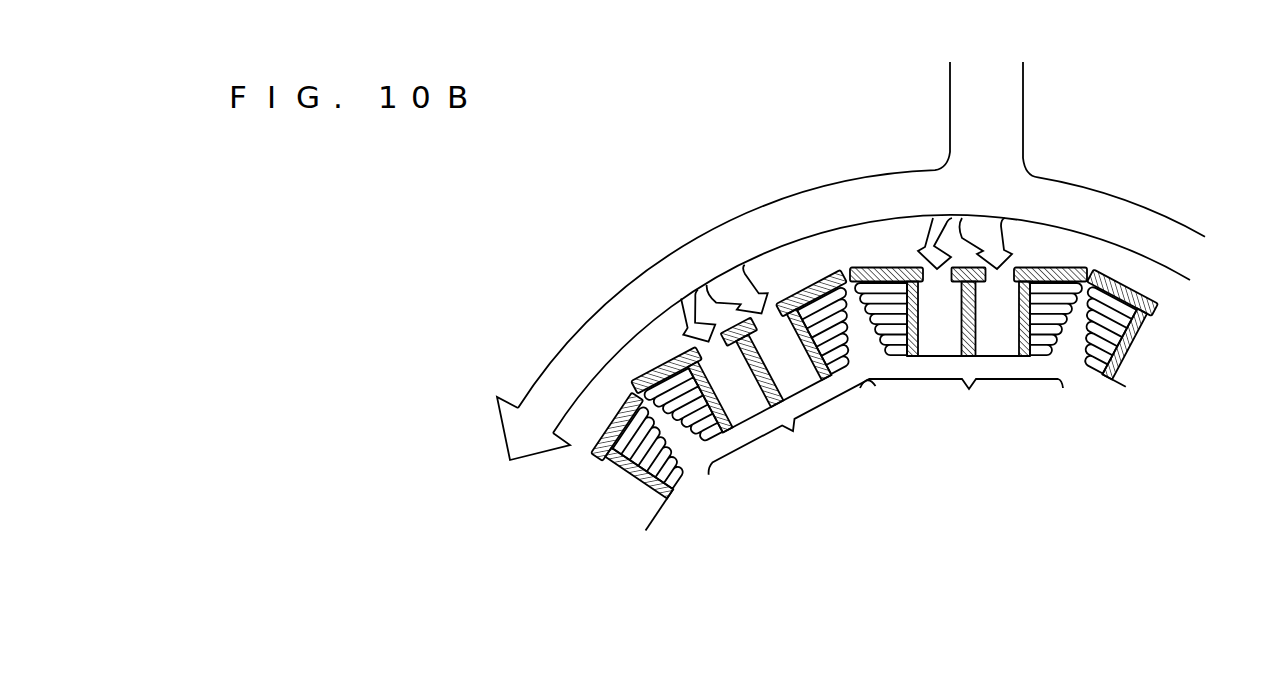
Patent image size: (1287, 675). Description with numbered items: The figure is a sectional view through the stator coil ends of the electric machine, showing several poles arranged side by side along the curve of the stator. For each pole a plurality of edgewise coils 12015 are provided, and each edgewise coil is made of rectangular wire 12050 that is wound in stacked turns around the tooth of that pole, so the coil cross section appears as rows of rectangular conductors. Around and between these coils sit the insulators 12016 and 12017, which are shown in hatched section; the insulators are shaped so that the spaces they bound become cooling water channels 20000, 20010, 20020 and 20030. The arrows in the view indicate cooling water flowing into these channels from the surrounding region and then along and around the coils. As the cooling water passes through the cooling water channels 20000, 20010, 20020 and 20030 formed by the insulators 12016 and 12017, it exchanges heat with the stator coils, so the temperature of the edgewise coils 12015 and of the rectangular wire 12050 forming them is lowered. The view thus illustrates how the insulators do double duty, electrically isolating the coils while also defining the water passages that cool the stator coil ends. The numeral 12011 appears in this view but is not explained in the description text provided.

The cooling water channel 20000 is at (963, 303).
The cooling water channel 20010 is at (877, 236).
The cooling water channel 20020 is at (807, 370).
The cooling water channel 20030 is at (723, 383).
The resin inflow arrows 12011 is at (762, 312).
The edgewise coil 12015 is at (883, 427).
The insulator 12016 is at (1064, 355).
The insulator 12017 is at (998, 355).
The rectangular wire 12050 is at (688, 428).